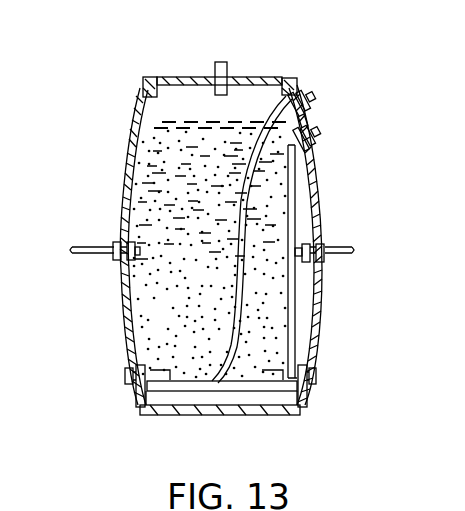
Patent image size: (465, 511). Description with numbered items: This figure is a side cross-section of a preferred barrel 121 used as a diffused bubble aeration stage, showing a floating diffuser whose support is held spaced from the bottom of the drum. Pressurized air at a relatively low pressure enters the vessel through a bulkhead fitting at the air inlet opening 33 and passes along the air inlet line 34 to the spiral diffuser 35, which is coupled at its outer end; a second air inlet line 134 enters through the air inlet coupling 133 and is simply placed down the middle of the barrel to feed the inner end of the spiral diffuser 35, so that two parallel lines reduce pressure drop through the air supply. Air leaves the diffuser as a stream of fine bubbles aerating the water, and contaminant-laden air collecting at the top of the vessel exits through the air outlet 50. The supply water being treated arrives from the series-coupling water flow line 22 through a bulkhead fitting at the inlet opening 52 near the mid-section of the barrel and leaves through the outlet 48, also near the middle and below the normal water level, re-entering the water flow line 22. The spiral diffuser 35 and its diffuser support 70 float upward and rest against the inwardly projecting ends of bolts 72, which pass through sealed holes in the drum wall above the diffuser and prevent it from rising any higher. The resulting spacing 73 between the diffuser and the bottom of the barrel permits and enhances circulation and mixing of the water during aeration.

The water flow line 22 is at (90, 256).
The air inlet opening 33 is at (318, 144).
The air inlet line 34 is at (320, 204).
The spiral diffuser 35 is at (199, 377).
The outlet 48 is at (328, 262).
The air outlet 50 is at (229, 67).
The inlet opening 52 is at (118, 245).
The diffuser support 70 is at (177, 388).
The bolts 72 is at (126, 378).
The spacing 73 is at (255, 396).
The barrel 121 is at (127, 152).
The air inlet coupling 133 is at (312, 92).
The second air inlet line 134 is at (233, 253).